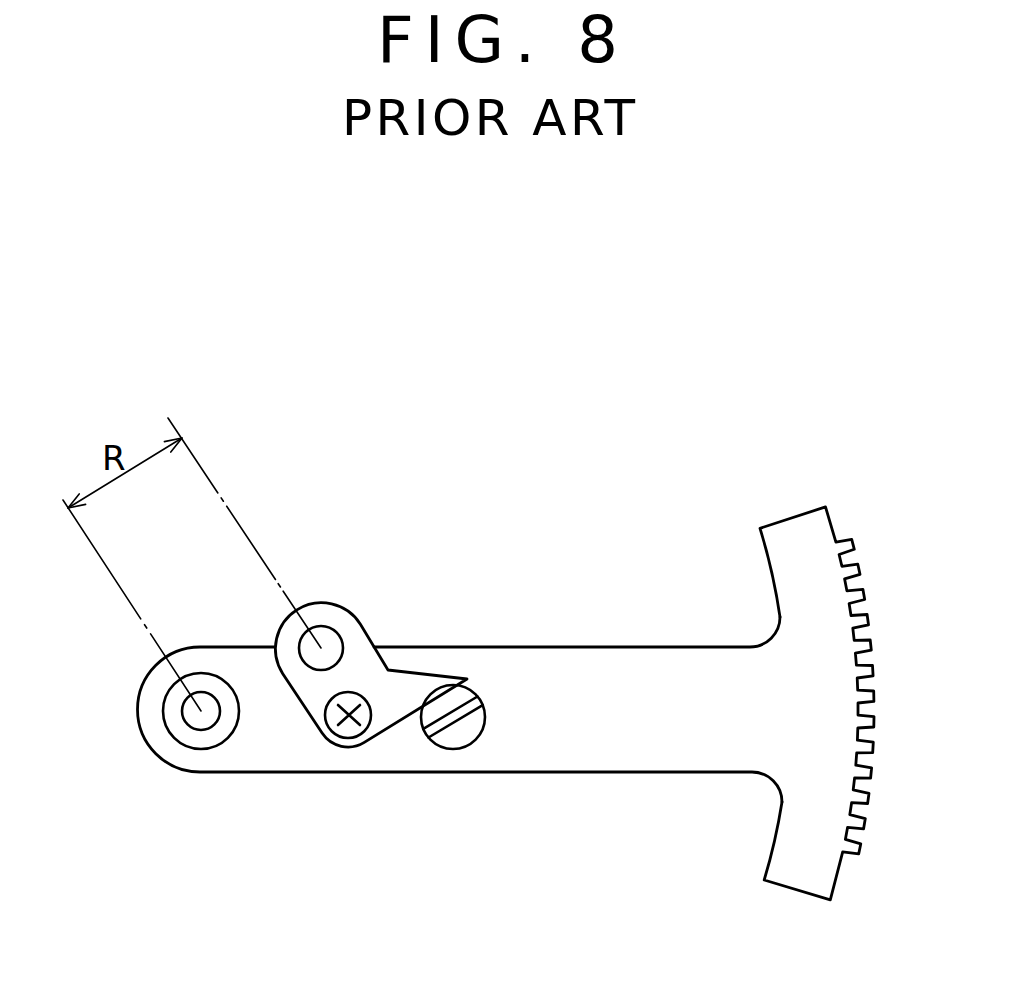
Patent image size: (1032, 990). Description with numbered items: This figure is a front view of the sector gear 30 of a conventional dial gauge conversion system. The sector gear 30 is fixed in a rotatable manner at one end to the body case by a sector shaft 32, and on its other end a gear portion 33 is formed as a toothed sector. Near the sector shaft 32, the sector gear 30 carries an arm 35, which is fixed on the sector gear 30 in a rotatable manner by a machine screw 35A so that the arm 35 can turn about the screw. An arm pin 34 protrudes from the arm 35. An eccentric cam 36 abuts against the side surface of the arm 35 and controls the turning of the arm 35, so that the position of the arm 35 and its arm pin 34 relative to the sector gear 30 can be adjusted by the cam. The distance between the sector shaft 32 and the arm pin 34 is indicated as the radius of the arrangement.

The sector gear 30 is at (631, 658).
The sector shaft 32 is at (201, 712).
The gear portion 33 is at (825, 865).
The arm pin 34 is at (327, 627).
The arm 35 is at (362, 648).
The machine screw 35A is at (349, 722).
The eccentric cam 36 is at (460, 727).